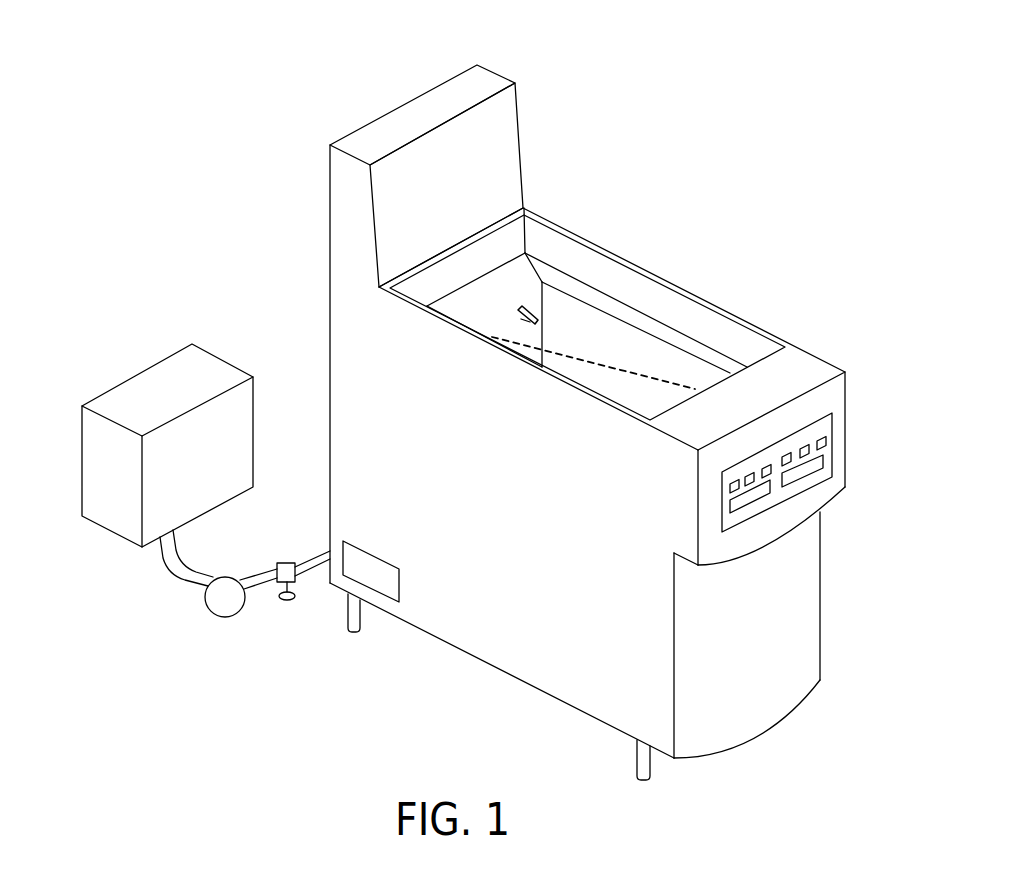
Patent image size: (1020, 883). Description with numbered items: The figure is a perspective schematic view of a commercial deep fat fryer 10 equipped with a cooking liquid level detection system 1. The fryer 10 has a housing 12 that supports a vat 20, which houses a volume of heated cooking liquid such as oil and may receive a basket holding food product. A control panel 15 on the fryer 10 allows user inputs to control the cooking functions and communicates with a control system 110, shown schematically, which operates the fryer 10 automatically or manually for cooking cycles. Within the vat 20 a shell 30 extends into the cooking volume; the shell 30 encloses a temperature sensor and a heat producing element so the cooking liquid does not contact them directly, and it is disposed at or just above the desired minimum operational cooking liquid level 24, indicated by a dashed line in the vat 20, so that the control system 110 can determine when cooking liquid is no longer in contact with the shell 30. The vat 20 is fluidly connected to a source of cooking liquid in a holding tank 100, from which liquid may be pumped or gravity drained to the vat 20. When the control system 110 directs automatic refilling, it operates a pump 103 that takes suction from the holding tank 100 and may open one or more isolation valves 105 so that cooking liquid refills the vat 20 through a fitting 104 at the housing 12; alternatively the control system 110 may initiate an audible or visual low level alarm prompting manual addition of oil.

The cooking liquid level detection system 1 is at (652, 88).
The fryer 10 is at (463, 592).
The housing 12 is at (518, 664).
The control panel 15 is at (777, 488).
The vat 20 is at (675, 338).
The desired minimum operational cooking liquid level 24 is at (593, 337).
The shell 30 is at (530, 312).
The holding tank 100 is at (122, 513).
The pump 103 is at (212, 605).
The valve 104 is at (257, 571).
The isolation valve 105 is at (273, 588).
The control system 110 is at (353, 573).